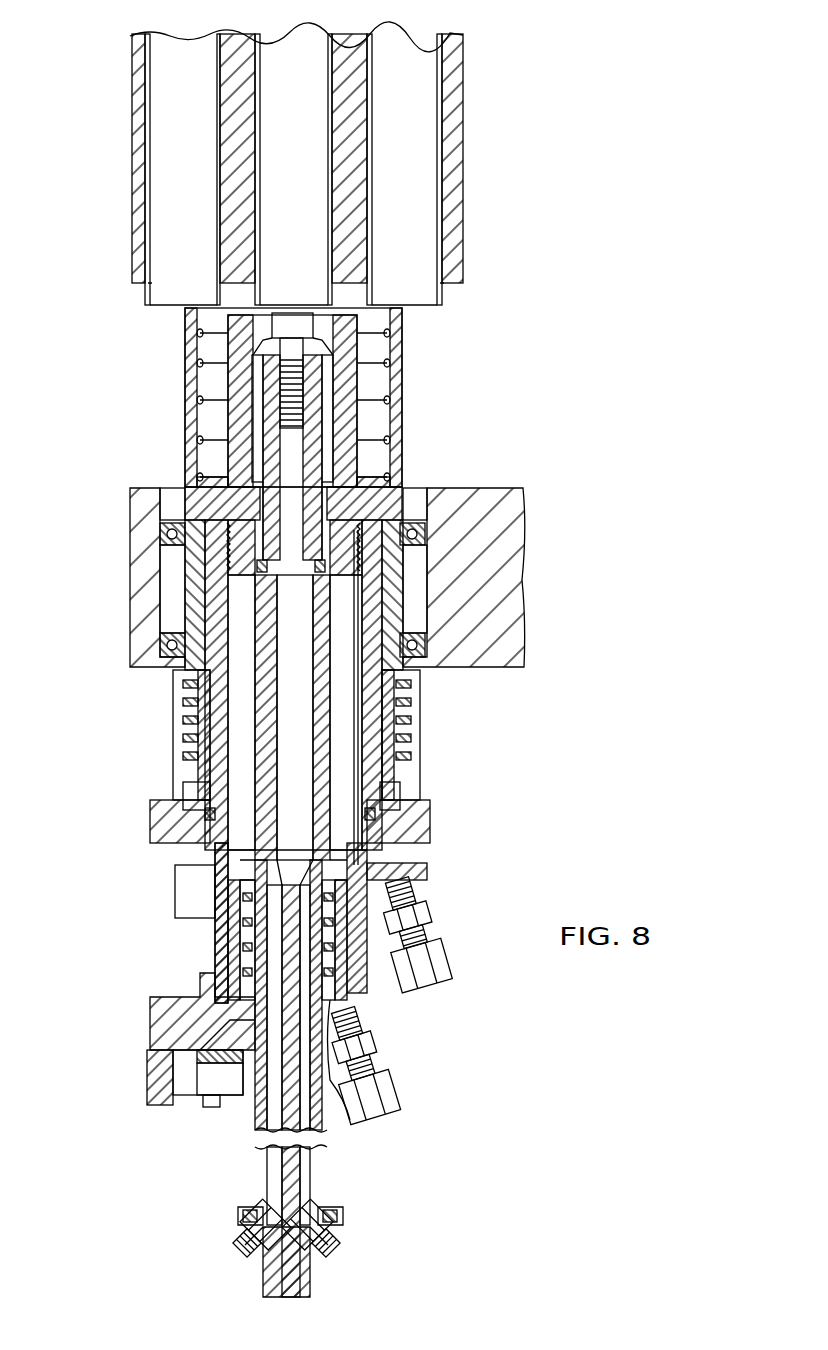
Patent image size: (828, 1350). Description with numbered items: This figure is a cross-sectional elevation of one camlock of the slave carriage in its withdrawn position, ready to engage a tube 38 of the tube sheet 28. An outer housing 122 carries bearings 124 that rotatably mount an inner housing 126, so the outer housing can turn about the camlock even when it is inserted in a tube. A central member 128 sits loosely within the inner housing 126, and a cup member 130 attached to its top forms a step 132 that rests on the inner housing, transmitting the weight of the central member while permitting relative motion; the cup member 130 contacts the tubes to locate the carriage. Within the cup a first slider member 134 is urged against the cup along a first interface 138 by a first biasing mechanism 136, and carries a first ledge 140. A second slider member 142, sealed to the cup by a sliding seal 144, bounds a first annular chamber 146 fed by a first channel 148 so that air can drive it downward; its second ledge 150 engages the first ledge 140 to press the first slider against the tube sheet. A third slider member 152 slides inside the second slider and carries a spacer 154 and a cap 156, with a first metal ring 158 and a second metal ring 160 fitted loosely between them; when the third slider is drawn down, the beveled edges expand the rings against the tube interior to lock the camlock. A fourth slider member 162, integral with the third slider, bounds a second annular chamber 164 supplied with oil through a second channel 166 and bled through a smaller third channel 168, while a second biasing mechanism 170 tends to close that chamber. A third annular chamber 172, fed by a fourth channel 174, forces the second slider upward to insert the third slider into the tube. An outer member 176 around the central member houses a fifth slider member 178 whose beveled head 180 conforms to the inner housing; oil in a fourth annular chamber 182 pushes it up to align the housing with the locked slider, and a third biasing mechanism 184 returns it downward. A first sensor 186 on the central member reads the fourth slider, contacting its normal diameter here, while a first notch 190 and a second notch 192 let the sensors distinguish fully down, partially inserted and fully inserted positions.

The tube sheet 28 is at (232, 30).
The tube 38 is at (146, 305).
The outer housing 122 is at (508, 540).
The bearings 124 is at (165, 535).
The inner housing 126 is at (172, 590).
The central member 128 is at (340, 770).
The cup member 130 is at (190, 428).
The step 132 is at (430, 490).
The first slider member 134 is at (235, 387).
The first biasing mechanism 136 is at (200, 333).
The first interface 138 is at (200, 482).
The first ledge 140 is at (322, 340).
The second slider member 142 is at (325, 805).
The sliding seal 144 is at (320, 567).
The first annular chamber 146 is at (335, 637).
The first channel 148 is at (345, 600).
The second ledge 150 is at (325, 537).
The third slider member 152 is at (278, 733).
The spacer 154 is at (326, 445).
The cap 156 is at (335, 360).
The first metal ring 158 is at (272, 415).
The second metal ring 160 is at (322, 500).
The fourth slider member 162 is at (222, 925).
The second annular chamber 164 is at (322, 856).
The second channel 166 is at (265, 895).
The third channel 168 is at (310, 900).
The second biasing mechanism 170 is at (245, 975).
The third annular chamber 172 is at (372, 1045).
The fourth channel 174 is at (385, 1090).
The outer member 176 is at (400, 742).
The fifth slider member 178 is at (373, 680).
The beveled head 180 is at (200, 578).
The fourth annular chamber 182 is at (192, 796).
The third biasing mechanism 184 is at (185, 718).
The first sensor 186 is at (200, 1098).
The first notch 190 is at (255, 1050).
The second notch 192 is at (255, 1205).